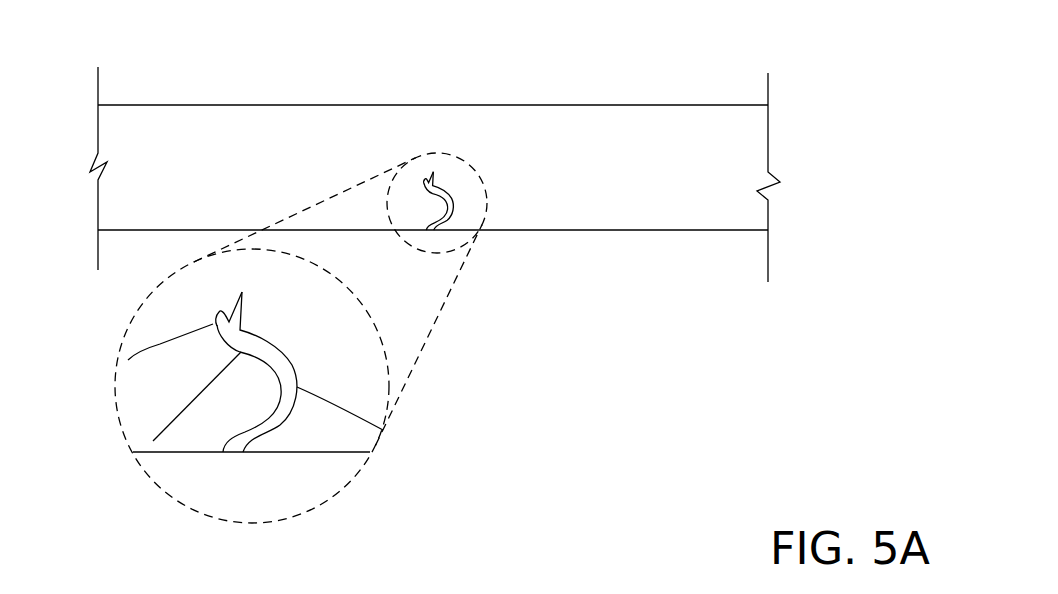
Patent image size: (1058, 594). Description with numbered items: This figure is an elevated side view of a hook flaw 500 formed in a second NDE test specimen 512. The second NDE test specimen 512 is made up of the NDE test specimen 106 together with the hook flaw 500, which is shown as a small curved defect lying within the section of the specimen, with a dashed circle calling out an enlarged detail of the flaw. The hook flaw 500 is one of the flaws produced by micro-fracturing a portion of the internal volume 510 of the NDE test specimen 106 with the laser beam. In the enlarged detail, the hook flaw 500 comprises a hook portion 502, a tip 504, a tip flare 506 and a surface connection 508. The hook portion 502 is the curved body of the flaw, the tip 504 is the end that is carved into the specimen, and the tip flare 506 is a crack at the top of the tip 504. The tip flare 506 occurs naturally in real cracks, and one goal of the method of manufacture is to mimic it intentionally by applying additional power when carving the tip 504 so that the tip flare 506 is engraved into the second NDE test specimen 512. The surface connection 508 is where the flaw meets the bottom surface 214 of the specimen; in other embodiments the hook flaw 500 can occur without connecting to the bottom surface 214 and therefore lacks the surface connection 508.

The NDE test specimen 106 is at (435, 144).
The second NDE test specimen 512 is at (340, 90).
The internal volume 510 is at (688, 162).
The bottom surface 214 is at (585, 231).
The hook flaw 500 is at (472, 193).
The surface connection 508 is at (230, 453).
The tip flare 506 is at (128, 360).
The tip 504 is at (153, 441).
The hook portion 502 is at (383, 430).